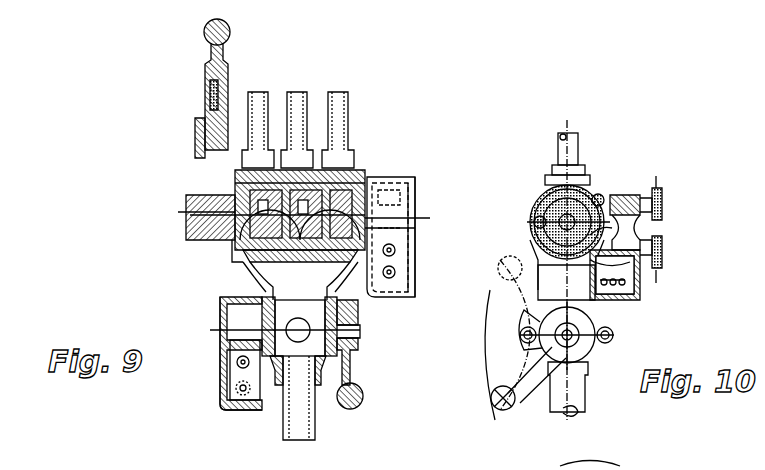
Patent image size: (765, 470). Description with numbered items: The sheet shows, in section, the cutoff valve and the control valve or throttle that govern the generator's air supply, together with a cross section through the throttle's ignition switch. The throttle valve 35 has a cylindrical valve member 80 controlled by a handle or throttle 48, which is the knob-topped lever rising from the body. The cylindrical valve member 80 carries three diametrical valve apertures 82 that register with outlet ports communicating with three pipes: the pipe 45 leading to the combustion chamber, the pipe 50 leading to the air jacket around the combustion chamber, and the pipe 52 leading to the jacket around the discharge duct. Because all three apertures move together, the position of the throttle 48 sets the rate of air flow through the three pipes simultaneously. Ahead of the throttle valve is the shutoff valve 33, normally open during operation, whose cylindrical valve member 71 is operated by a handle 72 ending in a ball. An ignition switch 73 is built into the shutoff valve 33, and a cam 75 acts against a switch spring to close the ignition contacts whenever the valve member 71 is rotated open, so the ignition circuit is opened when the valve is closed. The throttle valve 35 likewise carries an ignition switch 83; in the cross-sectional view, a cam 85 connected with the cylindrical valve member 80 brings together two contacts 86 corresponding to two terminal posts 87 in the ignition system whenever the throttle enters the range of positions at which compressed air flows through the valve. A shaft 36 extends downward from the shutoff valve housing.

In FIG. 9, the shutoff valve 33 is at (330, 373).
In FIG. 9, the throttle valve 35 is at (230, 247).
In FIG. 10, the throttle valve 35 is at (620, 180).
In FIG. 9, the outlet shaft 36 is at (318, 438).
In FIG. 9, the pipe 45 is at (305, 88).
In FIG. 9, the throttle 48 is at (231, 31).
In FIG. 9, the pipe 50 is at (350, 103).
In FIG. 10, the pipe 50 is at (557, 140).
In FIG. 9, the pipe 52 is at (255, 92).
In FIG. 9, the cylindrical valve member 71 is at (320, 316).
In FIG. 9, the handle 72 is at (363, 401).
In FIG. 10, the handle 72 is at (500, 412).
In FIG. 9, the ignition switch 73 is at (222, 404).
In FIG. 9, the cam 75 is at (235, 351).
In FIG. 9, the cylindrical valve member 80 is at (232, 252).
In FIG. 9, the valve apertures 82 is at (268, 263).
In FIG. 9, the ignition switch 83 is at (388, 177).
In FIG. 10, the ignition switch 83 is at (620, 300).
In FIG. 10, the cam 85 is at (553, 238).
In FIG. 10, the contacts 86 is at (640, 226).
In FIG. 10, the terminal posts 87 is at (665, 205).